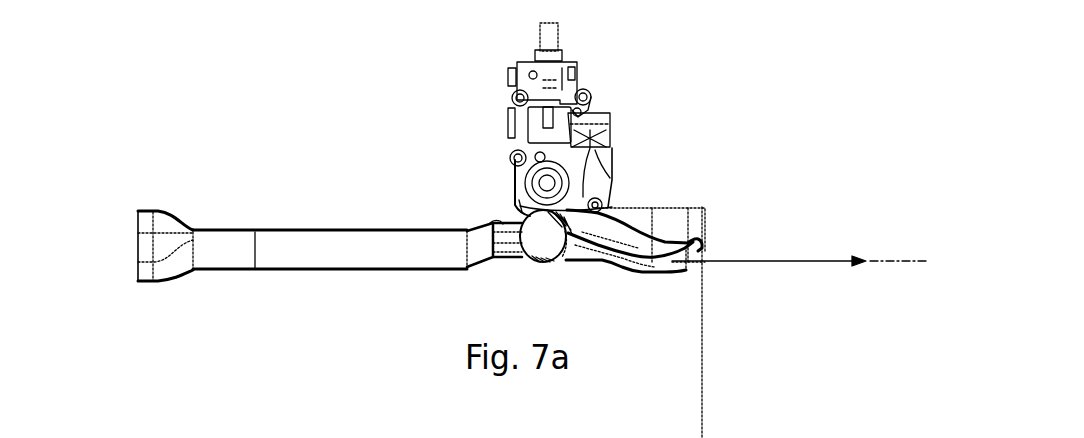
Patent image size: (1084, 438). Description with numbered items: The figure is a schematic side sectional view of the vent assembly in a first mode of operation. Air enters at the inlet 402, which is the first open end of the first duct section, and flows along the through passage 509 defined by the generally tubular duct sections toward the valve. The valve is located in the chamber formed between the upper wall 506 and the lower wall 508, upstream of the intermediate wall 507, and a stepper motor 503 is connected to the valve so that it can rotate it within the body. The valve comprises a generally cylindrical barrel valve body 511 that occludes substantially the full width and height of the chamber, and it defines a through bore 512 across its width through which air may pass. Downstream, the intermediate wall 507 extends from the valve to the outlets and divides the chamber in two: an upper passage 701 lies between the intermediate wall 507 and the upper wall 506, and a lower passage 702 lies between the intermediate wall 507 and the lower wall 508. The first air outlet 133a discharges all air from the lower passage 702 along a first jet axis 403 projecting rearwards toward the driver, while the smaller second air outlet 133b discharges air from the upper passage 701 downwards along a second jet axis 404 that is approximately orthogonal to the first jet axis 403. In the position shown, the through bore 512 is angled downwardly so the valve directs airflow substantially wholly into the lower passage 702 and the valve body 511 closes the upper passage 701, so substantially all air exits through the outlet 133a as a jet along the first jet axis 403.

The inlet 402 is at (134, 248).
The first jet axis 403 is at (896, 259).
The second jet axis 404 is at (700, 396).
The stepper motor 503 is at (561, 86).
The upper wall 506 is at (605, 218).
The intermediate wall 507 is at (643, 238).
The lower wall 508 is at (634, 278).
The through passage 509 is at (283, 258).
The barrel valve body 511 is at (532, 262).
The through bore 512 is at (539, 238).
The upper passage 701 is at (618, 228).
The lower passage 702 is at (623, 258).
The first air outlet 133a is at (687, 263).
The second air outlet 133b is at (704, 253).